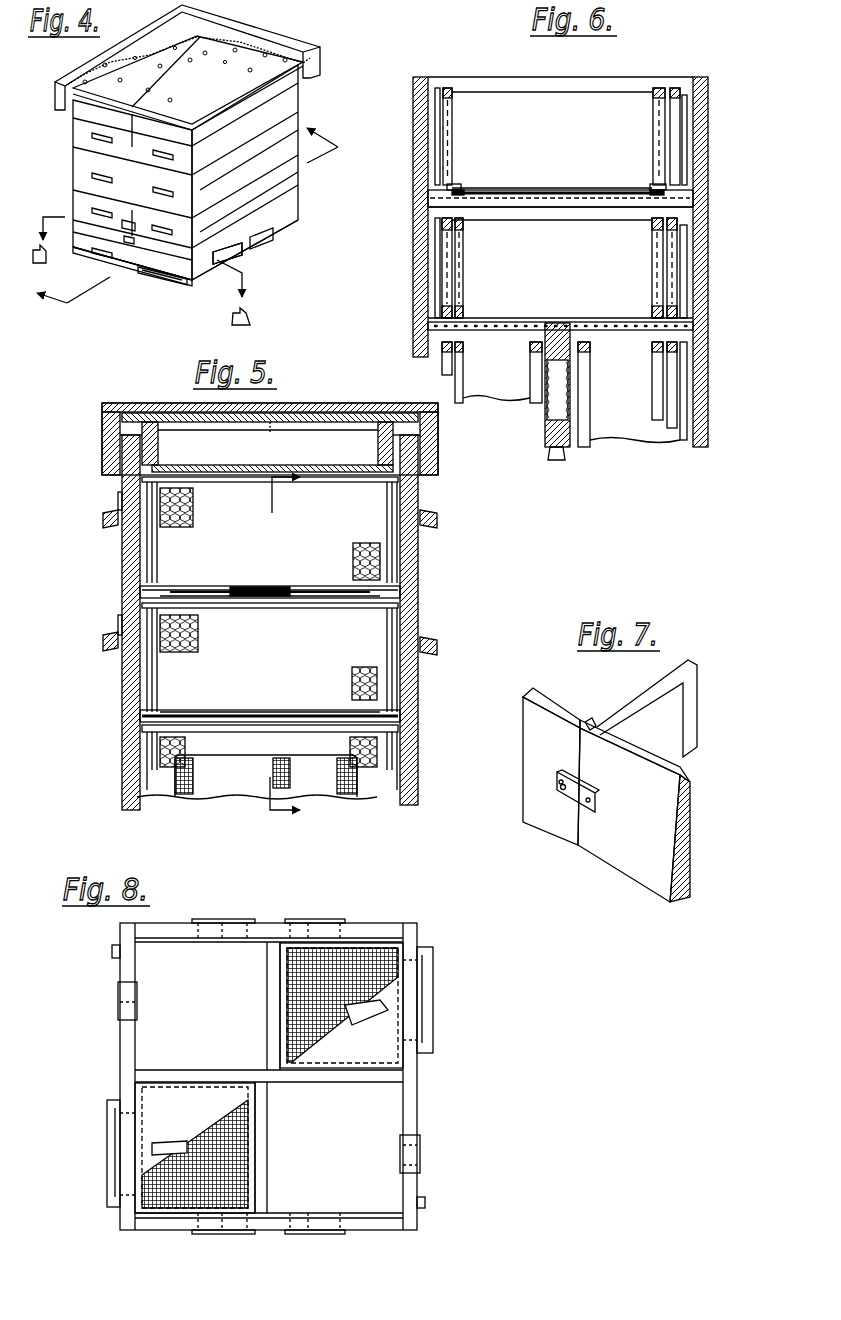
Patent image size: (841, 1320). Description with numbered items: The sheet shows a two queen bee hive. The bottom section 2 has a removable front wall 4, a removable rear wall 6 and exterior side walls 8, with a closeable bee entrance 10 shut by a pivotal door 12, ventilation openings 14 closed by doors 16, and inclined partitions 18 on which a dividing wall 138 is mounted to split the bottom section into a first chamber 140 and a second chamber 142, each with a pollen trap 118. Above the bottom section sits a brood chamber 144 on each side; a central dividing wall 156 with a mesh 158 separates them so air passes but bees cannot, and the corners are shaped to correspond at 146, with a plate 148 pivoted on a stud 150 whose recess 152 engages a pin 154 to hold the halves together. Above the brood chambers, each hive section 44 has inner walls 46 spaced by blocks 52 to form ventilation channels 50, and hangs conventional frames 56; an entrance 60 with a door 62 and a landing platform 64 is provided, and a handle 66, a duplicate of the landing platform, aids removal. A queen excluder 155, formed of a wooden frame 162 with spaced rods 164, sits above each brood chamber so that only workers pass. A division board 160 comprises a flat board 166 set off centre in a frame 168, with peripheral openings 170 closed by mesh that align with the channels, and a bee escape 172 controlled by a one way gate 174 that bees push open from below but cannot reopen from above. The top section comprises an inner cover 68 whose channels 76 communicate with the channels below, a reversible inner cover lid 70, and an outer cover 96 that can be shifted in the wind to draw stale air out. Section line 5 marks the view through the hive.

In FIG. 4, the bottom section 2 is at (272, 236).
In FIG. 8, the bottom section 2 is at (112, 938).
In FIG. 4, the front wall 4 is at (141, 271).
In FIG. 8, the front wall 4 is at (417, 942).
In FIG. 4, the section line 5 is at (196, 228).
In FIG. 5, the rear wall 6 is at (296, 633).
In FIG. 8, the rear wall 6 is at (120, 970).
In FIG. 8, the side wall 8 is at (175, 930).
In FIG. 8, the bee entrance 10 is at (425, 990).
In FIG. 4, the pivotal door 12 is at (160, 284).
In FIG. 8, the pivotal door 12 is at (420, 972).
In FIG. 8, the ventilation opening 14 is at (224, 917).
In FIG. 4, the door 16 is at (258, 256).
In FIG. 8, the door 16 is at (240, 920).
In FIG. 8, the inclined partition 18 is at (145, 1042).
In FIG. 4, the hive section 44 is at (83, 134).
In FIG. 6, the hive section 44 is at (422, 74).
In FIG. 5, the hive section 44 is at (418, 528).
In FIG. 6, the inner wall 46 is at (437, 98).
In FIG. 5, the inner wall 46 is at (150, 585).
In FIG. 6, the channel 50 is at (432, 168).
In FIG. 5, the channel 50 is at (143, 565).
In FIG. 6, the block 52 is at (433, 128).
In FIG. 5, the block 52 is at (140, 545).
In FIG. 6, the frame 56 is at (452, 85).
In FIG. 5, the frame 56 is at (208, 483).
In FIG. 5, the entrance 60 is at (118, 500).
In FIG. 5, the pivotal door 62 is at (106, 515).
In FIG. 4, the landing platform 64 is at (153, 282).
In FIG. 5, the landing platform 64 is at (108, 524).
In FIG. 8, the landing platform 64 is at (432, 1018).
In FIG. 5, the handle 66 is at (430, 512).
In FIG. 4, the inner cover 68 is at (292, 104).
In FIG. 5, the inner cover 68 is at (323, 455).
In FIG. 4, the inner cover lid 70 is at (260, 58).
In FIG. 5, the inner cover lid 70 is at (180, 410).
In FIG. 5, the channel 76 is at (120, 478).
In FIG. 4, the outer cover 96 is at (158, 32).
In FIG. 5, the outer cover 96 is at (353, 402).
In FIG. 8, the pollen trap 118 is at (365, 940).
In FIG. 8, the dividing wall 138 is at (217, 1075).
In FIG. 8, the first chamber 140 is at (140, 1030).
In FIG. 8, the second chamber 142 is at (385, 1188).
In FIG. 4, the brood chamber 144 is at (83, 210).
In FIG. 6, the brood chamber 144 is at (705, 428).
In FIG. 5, the brood chamber 144 is at (120, 797).
In FIG. 7, the brood chamber 144 is at (562, 698).
In FIG. 7, the corner shaping 146 is at (590, 722).
In FIG. 4, the plate 148 is at (126, 240).
In FIG. 7, the plate 148 is at (572, 812).
In FIG. 7, the stud 150 is at (595, 805).
In FIG. 7, the recess 152 is at (562, 795).
In FIG. 7, the pin 154 is at (560, 787).
In FIG. 4, the queen excluder 155 is at (233, 205).
In FIG. 6, the queen excluder 155 is at (545, 320).
In FIG. 5, the queen excluder 155 is at (272, 710).
In FIG. 6, the central dividing wall 156 is at (562, 460).
In FIG. 5, the central dividing wall 156 is at (372, 790).
In FIG. 7, the central dividing wall 156 is at (645, 690).
In FIG. 6, the mesh 158 is at (575, 397).
In FIG. 5, the mesh 158 is at (186, 780).
In FIG. 4, the division board 160 is at (233, 167).
In FIG. 6, the division board 160 is at (572, 190).
In FIG. 5, the division board 160 is at (255, 588).
In FIG. 6, the wooden frame 162 is at (413, 332).
In FIG. 5, the wooden frame 162 is at (410, 718).
In FIG. 6, the rod 164 is at (510, 325).
In FIG. 5, the rod 164 is at (220, 712).
In FIG. 6, the flat board 166 is at (540, 192).
In FIG. 5, the flat board 166 is at (340, 590).
In FIG. 6, the frame 168 is at (413, 195).
In FIG. 5, the frame 168 is at (420, 594).
In FIG. 6, the opening 170 is at (413, 210).
In FIG. 6, the bee escape 172 is at (460, 186).
In FIG. 6, the one way gate 174 is at (462, 190).